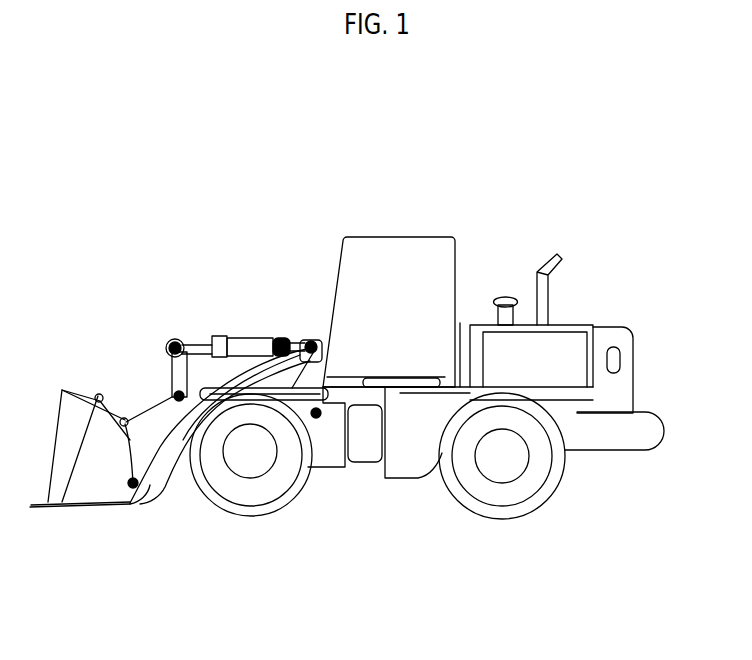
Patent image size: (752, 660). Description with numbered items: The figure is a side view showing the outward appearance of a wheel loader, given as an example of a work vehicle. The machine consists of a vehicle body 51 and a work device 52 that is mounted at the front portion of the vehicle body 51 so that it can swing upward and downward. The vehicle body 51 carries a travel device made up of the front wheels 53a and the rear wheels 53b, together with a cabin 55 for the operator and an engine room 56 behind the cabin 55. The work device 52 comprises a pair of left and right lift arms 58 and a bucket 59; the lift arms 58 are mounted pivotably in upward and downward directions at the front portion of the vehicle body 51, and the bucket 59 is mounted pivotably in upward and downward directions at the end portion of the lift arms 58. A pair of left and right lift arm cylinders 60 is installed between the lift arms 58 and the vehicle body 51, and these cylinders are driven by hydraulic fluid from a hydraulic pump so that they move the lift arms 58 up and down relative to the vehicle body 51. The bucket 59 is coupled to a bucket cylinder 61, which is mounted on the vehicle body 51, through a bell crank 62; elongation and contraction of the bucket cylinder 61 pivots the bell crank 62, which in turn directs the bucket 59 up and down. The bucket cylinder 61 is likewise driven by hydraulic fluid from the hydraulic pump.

The vehicle body 51 is at (645, 382).
The work device 52 is at (173, 338).
The front wheels 53a is at (263, 525).
The rear wheels 53b is at (510, 525).
The cabin 55 is at (343, 317).
The engine room 56 is at (583, 353).
The lift arms 58 is at (167, 478).
The bucket 59 is at (78, 515).
The lift arm cylinders 60 is at (317, 418).
The bucket cylinder 61 is at (241, 348).
The bell crank 62 is at (163, 397).